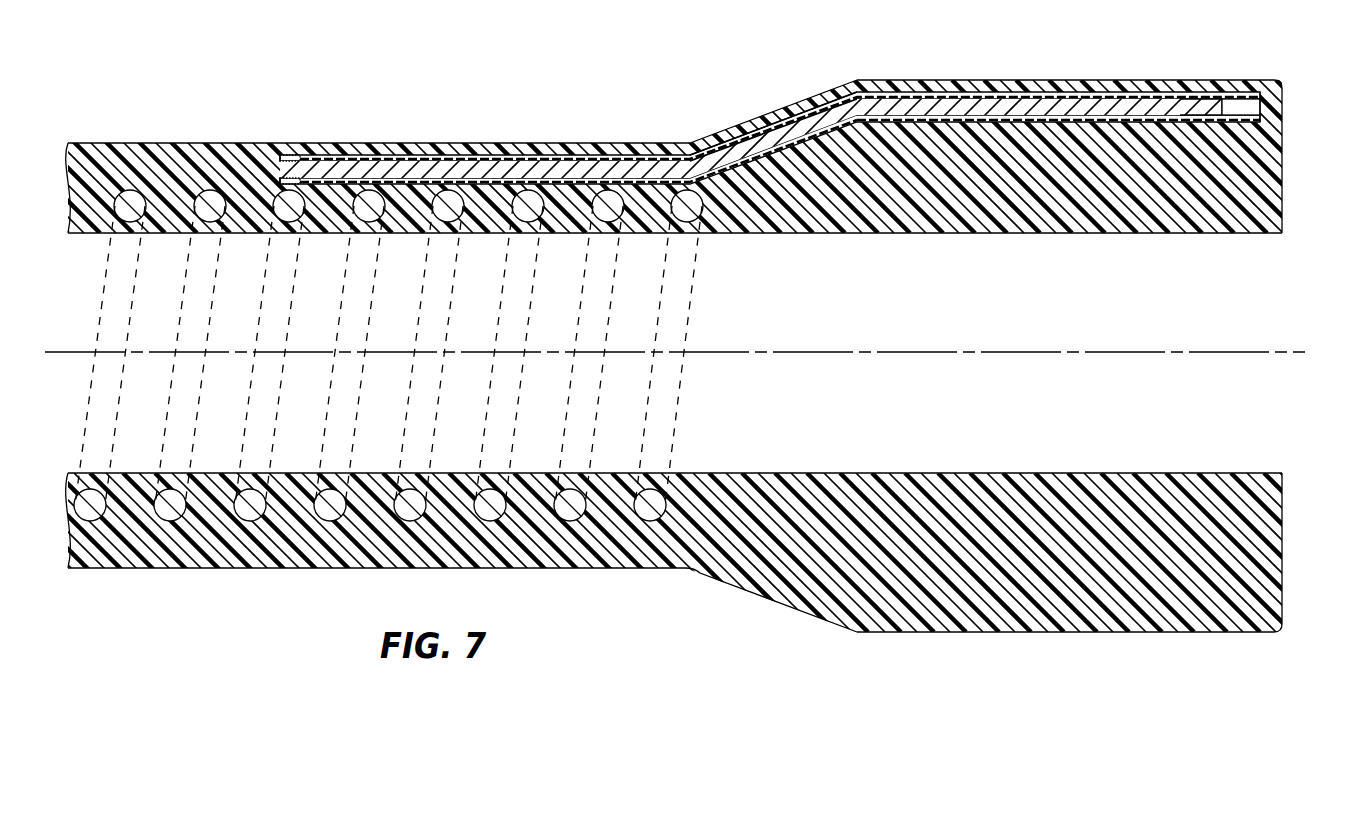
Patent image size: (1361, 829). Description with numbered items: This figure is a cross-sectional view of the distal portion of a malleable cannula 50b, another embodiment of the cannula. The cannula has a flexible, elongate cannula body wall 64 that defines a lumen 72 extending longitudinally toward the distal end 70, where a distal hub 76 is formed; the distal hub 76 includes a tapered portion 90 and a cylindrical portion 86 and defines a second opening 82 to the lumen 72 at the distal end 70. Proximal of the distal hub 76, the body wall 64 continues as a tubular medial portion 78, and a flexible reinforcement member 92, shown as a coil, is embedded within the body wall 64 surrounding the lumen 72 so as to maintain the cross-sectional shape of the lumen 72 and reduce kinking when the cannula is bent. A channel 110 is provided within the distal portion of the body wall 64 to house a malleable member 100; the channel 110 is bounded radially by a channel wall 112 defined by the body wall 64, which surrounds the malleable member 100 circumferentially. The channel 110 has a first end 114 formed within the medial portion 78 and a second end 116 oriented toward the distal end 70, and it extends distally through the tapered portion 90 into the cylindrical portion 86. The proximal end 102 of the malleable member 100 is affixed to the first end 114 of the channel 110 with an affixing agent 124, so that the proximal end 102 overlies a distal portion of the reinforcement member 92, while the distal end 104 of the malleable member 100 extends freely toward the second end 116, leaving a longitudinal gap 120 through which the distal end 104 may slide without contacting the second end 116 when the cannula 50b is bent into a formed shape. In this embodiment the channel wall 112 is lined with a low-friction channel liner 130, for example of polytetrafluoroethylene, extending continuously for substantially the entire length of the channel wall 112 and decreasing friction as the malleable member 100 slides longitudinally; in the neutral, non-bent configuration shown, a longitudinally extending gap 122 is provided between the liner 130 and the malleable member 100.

The malleable cannula 50b is at (476, 95).
The cannula body wall 64 is at (100, 140).
The tubular medial portion 78 is at (146, 142).
The flexible reinforcement member 92 is at (207, 192).
The first end of the channel 114 is at (287, 155).
The proximal end of the malleable member 102 is at (298, 168).
The affixing agent 124 is at (308, 152).
The low-friction channel liner 130 is at (626, 150).
The channel wall 112 is at (745, 150).
The channel 110 is at (815, 130).
The malleable member 100 is at (850, 93).
The distal hub 76 is at (925, 80).
The longitudinally extending gap 122 is at (1137, 95).
The distal end of the malleable member 104 is at (1205, 104).
The longitudinal gap 120 is at (1256, 101).
The second end of the channel 116 is at (1240, 118).
The second opening 82 is at (1283, 256).
The lumen 72 is at (675, 319).
The tapered portion 90 is at (765, 604).
The cylindrical portion 86 is at (1080, 633).
The distal end 70 is at (1280, 632).